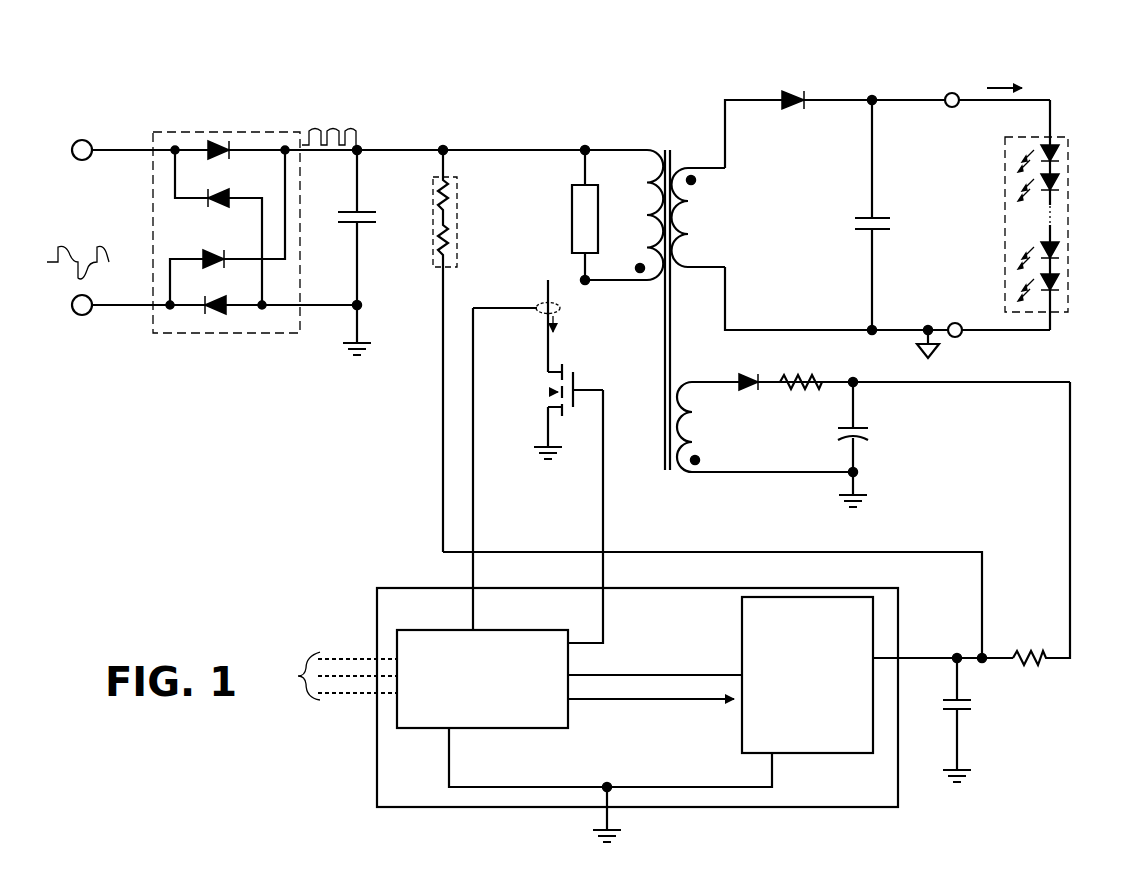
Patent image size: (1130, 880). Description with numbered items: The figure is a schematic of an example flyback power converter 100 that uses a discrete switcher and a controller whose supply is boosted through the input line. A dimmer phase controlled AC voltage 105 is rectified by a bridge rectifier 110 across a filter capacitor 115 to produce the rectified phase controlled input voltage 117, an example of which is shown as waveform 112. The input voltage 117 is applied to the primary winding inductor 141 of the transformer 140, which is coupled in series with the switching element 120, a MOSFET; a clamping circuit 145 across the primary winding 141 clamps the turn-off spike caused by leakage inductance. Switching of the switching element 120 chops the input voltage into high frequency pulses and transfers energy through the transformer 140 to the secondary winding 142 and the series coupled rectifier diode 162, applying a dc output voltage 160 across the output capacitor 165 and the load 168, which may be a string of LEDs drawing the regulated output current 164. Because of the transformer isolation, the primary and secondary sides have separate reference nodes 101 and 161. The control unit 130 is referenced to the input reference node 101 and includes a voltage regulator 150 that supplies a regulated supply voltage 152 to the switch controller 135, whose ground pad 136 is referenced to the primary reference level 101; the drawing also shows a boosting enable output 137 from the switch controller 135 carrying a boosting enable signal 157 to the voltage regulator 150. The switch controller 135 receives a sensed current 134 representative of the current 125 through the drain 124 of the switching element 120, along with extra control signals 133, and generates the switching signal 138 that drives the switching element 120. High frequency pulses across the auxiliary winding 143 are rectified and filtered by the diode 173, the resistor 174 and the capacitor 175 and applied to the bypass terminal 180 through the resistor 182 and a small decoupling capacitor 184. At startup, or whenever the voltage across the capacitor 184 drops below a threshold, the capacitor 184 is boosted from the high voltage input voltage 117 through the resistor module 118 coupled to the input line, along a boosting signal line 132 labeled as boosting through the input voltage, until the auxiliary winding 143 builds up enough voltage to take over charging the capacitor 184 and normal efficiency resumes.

The power converter 100 is at (477, 30).
The input reference node 101 is at (342, 350).
The dimmer phase controlled AC voltage 105 is at (62, 176).
The bridge rectifier 110 is at (258, 132).
The waveform 112 is at (328, 130).
The filter capacitor 115 is at (380, 243).
The input voltage 117 is at (403, 130).
The resistor module 118 is at (466, 198).
The switching element 120 is at (530, 399).
The drain 124 is at (524, 366).
The switch current 125 is at (562, 322).
The control unit 130 is at (368, 800).
The boosting signal line 132 is at (966, 524).
The extra control signals 133 is at (302, 658).
The sensed current 134 is at (484, 584).
The switch controller 135 is at (482, 679).
The ground pad 136 is at (450, 742).
The boosting enable output 137 is at (584, 724).
The switching signal 138 is at (608, 584).
The transformer 140 is at (660, 142).
The primary winding 141 is at (636, 188).
The secondary winding 142 is at (698, 236).
The auxiliary winding 143 is at (700, 432).
The clamping circuit 145 is at (565, 222).
The voltage regulator 150 is at (733, 719).
The regulated supply voltage 152 is at (724, 672).
The boosting enable signal 157 is at (730, 718).
The output voltage 160 is at (960, 104).
The output reference node 161 is at (944, 350).
The rectifier diode 162 is at (788, 86).
The output current 164 is at (1032, 72).
The output capacitor 165 is at (852, 226).
The load 168 is at (1070, 292).
The diode 173 is at (748, 392).
The resistor 174 is at (806, 392).
The capacitor 175 is at (870, 440).
The bypass terminal 180 is at (904, 656).
The resistor 182 is at (1032, 670).
The decoupling capacitor 184 is at (966, 714).